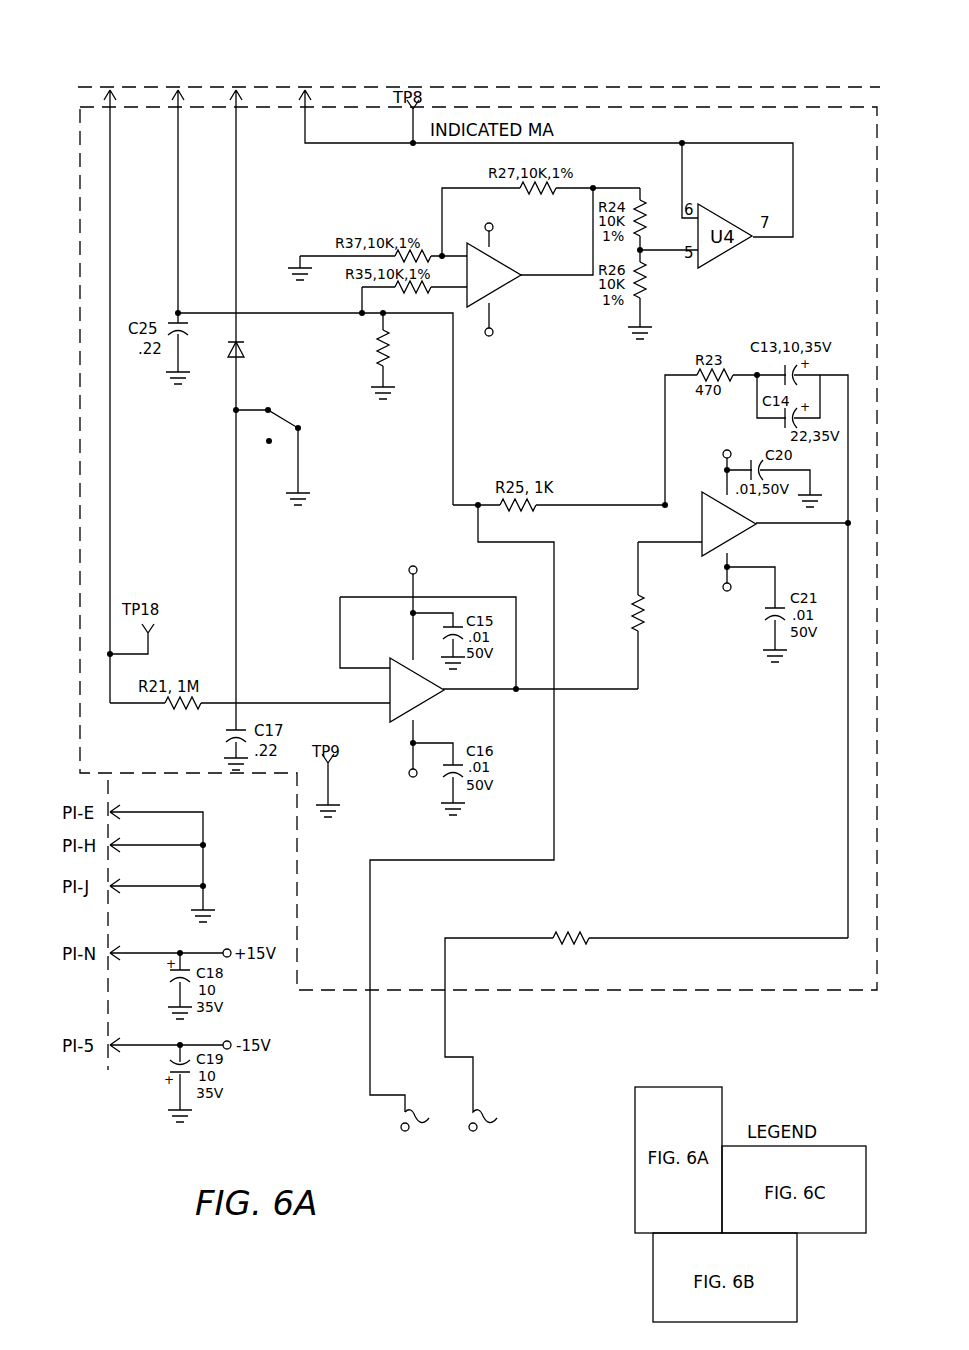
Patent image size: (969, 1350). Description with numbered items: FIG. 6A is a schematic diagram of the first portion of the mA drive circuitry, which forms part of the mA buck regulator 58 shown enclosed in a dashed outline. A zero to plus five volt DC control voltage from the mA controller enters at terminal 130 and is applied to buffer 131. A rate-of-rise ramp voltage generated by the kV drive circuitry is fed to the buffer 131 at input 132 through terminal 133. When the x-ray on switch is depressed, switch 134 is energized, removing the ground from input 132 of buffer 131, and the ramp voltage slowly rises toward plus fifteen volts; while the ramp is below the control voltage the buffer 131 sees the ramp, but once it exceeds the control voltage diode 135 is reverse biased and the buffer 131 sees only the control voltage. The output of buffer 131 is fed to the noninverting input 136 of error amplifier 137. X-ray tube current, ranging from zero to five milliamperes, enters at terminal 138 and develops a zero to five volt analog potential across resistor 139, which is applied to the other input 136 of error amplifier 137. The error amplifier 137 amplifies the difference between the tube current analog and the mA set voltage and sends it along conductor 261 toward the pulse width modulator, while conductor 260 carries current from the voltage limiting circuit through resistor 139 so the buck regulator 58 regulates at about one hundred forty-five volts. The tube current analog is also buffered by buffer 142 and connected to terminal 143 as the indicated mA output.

The mA buck regulator 58 is at (591, 106).
The terminal 130 is at (106, 50).
The terminal 138 is at (174, 50).
The terminal 133 is at (232, 50).
The terminal 143 is at (300, 50).
The buffer 142 is at (516, 288).
The resistor 139 is at (418, 348).
The diode 135 is at (278, 344).
The switch 134 is at (338, 420).
The buffer 131 is at (388, 677).
The input 132 is at (390, 720).
The input of error amplifier 136 is at (700, 550).
The error amplifier 137 is at (688, 531).
The conductor 260 is at (415, 1114).
The conductor 261 is at (483, 1114).